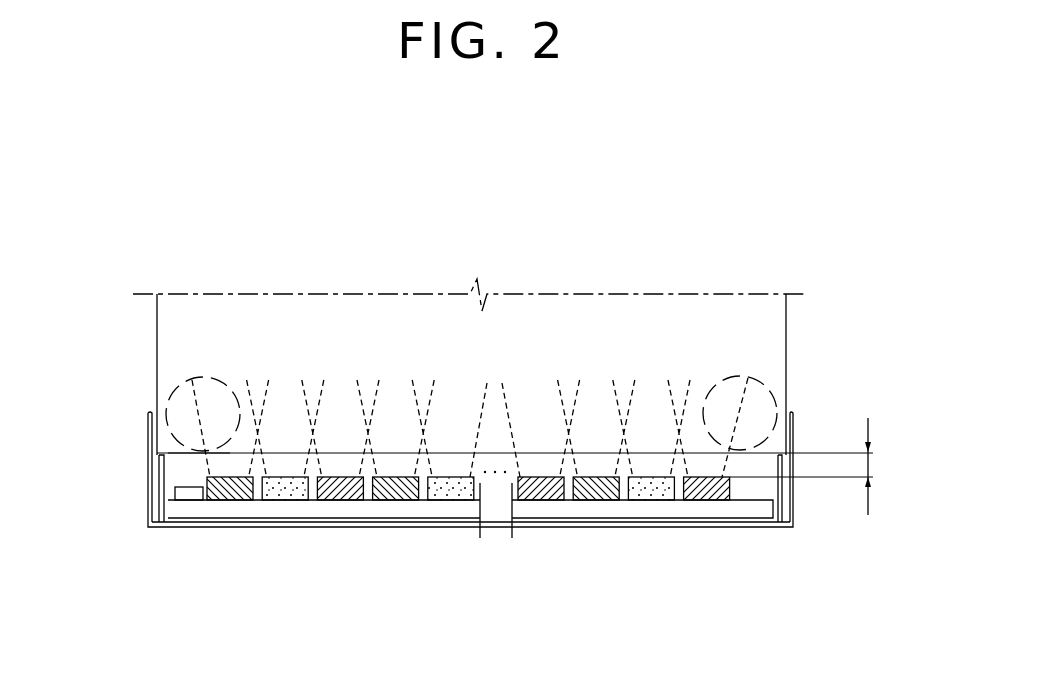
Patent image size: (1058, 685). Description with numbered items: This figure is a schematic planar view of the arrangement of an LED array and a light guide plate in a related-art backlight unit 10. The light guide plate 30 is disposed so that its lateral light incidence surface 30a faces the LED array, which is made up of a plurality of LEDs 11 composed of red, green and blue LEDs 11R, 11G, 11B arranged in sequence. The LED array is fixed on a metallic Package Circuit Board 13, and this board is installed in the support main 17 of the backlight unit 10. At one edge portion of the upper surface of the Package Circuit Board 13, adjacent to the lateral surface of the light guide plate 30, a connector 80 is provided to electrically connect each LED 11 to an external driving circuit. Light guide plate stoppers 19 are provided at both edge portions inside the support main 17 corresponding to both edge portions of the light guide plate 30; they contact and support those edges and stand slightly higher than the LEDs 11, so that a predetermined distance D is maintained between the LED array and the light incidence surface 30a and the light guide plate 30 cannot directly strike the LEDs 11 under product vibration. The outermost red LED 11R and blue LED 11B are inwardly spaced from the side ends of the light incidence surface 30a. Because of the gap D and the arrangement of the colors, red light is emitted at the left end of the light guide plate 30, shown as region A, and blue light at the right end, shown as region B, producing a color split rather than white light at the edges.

The backlight unit 10 is at (815, 257).
The light guide plate 30 is at (765, 353).
The light incidence surface 30a is at (190, 457).
The support main 17 is at (148, 430).
The light guide plate stoppers 19 is at (159, 463).
The Package Circuit Board (PCB) 13 is at (758, 505).
The connector 80 is at (175, 495).
The LEDs 11 is at (205, 583).
The red LED 11R is at (233, 490).
The green LED 11G is at (288, 488).
The blue LED 11B is at (340, 488).
The red light emission region A is at (168, 403).
The blue light emission region B is at (776, 402).
The predetermined distance D is at (814, 466).